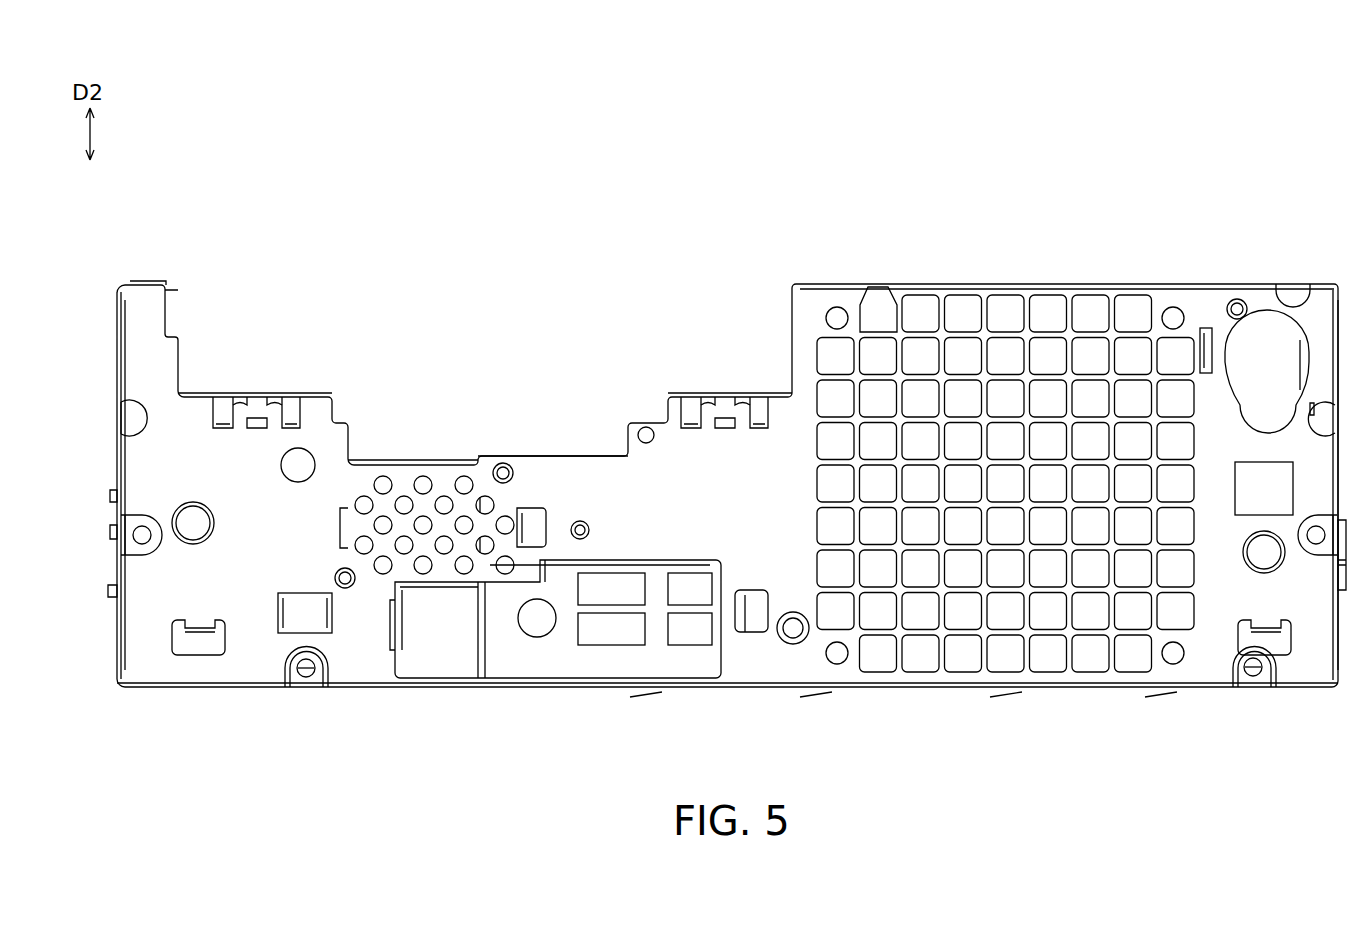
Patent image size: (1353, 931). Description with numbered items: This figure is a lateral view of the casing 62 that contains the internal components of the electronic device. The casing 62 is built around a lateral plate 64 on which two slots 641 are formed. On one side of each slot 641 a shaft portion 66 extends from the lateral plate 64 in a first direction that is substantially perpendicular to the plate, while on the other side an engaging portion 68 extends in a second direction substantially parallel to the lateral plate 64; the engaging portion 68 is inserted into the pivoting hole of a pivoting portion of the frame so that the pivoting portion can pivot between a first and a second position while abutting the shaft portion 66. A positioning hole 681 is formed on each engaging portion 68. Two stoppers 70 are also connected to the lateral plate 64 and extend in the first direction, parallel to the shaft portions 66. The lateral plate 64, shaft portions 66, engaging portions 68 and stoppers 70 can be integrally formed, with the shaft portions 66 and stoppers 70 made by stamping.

The casing 62 is at (264, 190).
The lateral plate 64 is at (557, 454).
The shaft portion 66 is at (224, 425).
The engaging portion 68 is at (265, 412).
The positioning hole 681 is at (258, 426).
The slot 641 is at (290, 418).
The stopper 70 is at (236, 398).